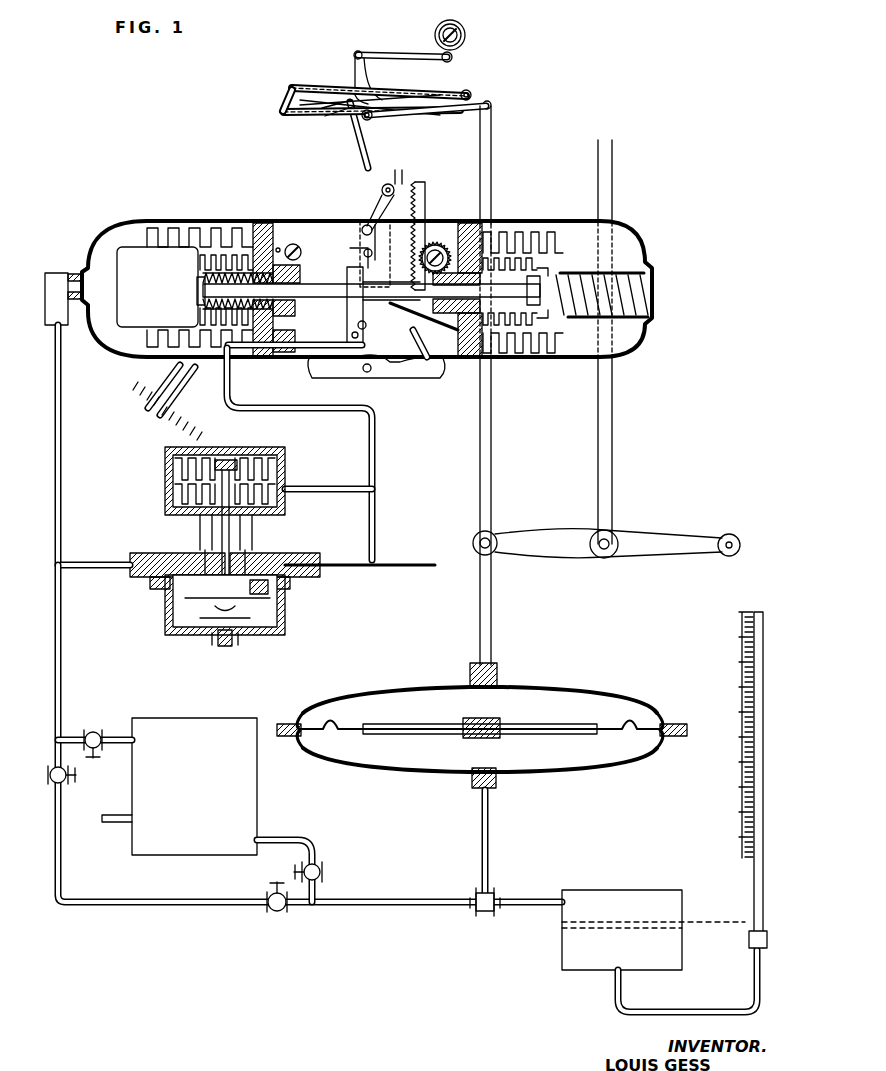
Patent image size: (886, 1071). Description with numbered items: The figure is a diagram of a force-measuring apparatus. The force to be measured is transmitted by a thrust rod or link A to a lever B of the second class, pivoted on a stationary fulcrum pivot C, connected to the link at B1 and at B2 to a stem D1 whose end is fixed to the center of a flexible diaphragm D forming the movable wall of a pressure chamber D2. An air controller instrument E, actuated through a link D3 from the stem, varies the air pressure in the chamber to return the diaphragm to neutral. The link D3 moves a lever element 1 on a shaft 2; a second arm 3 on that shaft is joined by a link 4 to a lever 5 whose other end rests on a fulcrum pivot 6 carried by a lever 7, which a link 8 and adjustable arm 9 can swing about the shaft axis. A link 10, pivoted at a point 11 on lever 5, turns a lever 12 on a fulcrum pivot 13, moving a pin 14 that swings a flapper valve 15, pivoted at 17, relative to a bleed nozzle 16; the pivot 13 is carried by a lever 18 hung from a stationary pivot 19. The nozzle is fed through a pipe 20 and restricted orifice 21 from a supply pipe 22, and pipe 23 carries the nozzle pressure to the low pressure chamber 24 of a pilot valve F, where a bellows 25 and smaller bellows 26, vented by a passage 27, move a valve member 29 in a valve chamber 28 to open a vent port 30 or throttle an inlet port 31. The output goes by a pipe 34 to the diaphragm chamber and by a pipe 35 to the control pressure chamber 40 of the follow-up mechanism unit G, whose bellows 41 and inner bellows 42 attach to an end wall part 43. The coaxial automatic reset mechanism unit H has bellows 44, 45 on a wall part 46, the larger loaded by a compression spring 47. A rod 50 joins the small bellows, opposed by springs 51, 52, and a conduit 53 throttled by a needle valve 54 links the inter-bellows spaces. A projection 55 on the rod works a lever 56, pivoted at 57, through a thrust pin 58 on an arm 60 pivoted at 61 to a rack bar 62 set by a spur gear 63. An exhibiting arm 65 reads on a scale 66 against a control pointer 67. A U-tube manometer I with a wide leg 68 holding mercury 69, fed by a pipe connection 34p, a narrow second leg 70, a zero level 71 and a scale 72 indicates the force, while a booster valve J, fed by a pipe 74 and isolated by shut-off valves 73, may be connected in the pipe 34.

The lever element 1 is at (486, 100).
The shaft 2 is at (372, 122).
The second arm 3 is at (305, 92).
The link 4 is at (280, 95).
The lever 5 is at (330, 98).
The fulcrum pivot 6 is at (467, 92).
The lever 7 is at (368, 72).
The link 8 is at (410, 52).
The arm 9 is at (455, 55).
The link 10 is at (358, 150).
The point 11 is at (345, 116).
The lever 12 is at (414, 372).
The fulcrum pivot 13 is at (368, 372).
The pin 14 is at (356, 326).
The flapper valve 15 is at (383, 307).
The bleed nozzle 16 is at (300, 362).
The pivot 17 is at (352, 242).
The lever 18 is at (392, 255).
The stationary pivot 19 is at (367, 225).
The pipe 20 is at (298, 408).
The restricted orifice 21 is at (376, 528).
The pipe 22 is at (402, 566).
The pipe 23 is at (322, 489).
The low pressure chamber 24 is at (284, 505).
The bellows 25 is at (280, 470).
The smaller bellows 26 is at (178, 492).
The passage 27 is at (245, 520).
The valve chamber 28 is at (180, 598).
The valve member 29 is at (205, 603).
The vent port 30 is at (232, 642).
The inlet port 31 is at (270, 590).
The pipe 34 is at (60, 652).
The pipe connection 34p is at (530, 885).
The pipe 35 is at (60, 482).
The control pressure chamber 40 is at (85, 260).
The bellows 41 is at (165, 230).
The smaller coaxial bellows 42 is at (205, 258).
The rigid stationary end wall part 43 is at (262, 225).
The large bellows element 44 is at (545, 358).
The small bellows element 45 is at (515, 358).
The wall part 46 is at (470, 228).
The compression spring 47 is at (555, 316).
The rod or bar 50 is at (288, 326).
The spring 51 is at (225, 262).
The spring 52 is at (522, 245).
The conduit 53 is at (430, 320).
The throttling element 54 is at (298, 245).
The transverse projection 55 is at (280, 248).
The lever 56 is at (350, 310).
The pivot 57 is at (355, 340).
The thrust pin 58 is at (364, 253).
The arm 60 is at (380, 190).
The pivot 61 is at (400, 172).
The rack bar 62 is at (426, 188).
The spur gear 63 is at (436, 244).
The exhibiting arm 65 is at (185, 405).
The scale 66 is at (160, 410).
The control pointer 67 is at (180, 380).
The leg 68 is at (602, 890).
The mercury 69 is at (570, 942).
The second leg 70 is at (764, 757).
The line 71 is at (690, 922).
The scale 72 is at (740, 672).
The shut-off valves 73 is at (80, 775).
The pipe 74 is at (110, 822).
The thrust rod or link A is at (612, 162).
The lever B is at (552, 530).
The pivotal connection B1 is at (612, 535).
The pivotal connection B2 is at (492, 553).
The stationary fulcrum pivot C is at (733, 538).
The flexible diaphragm D is at (350, 712).
The stem D1 is at (493, 628).
The pressure chamber D2 is at (400, 752).
The link D3 is at (493, 155).
The air controller instrument E is at (104, 184).
The pilot valve or relay F is at (165, 472).
The follow-up mechanism unit G is at (100, 228).
The automatic reset mechanism unit H is at (640, 235).
The U-tube manometer I is at (697, 846).
The relay or booster valve J is at (188, 725).